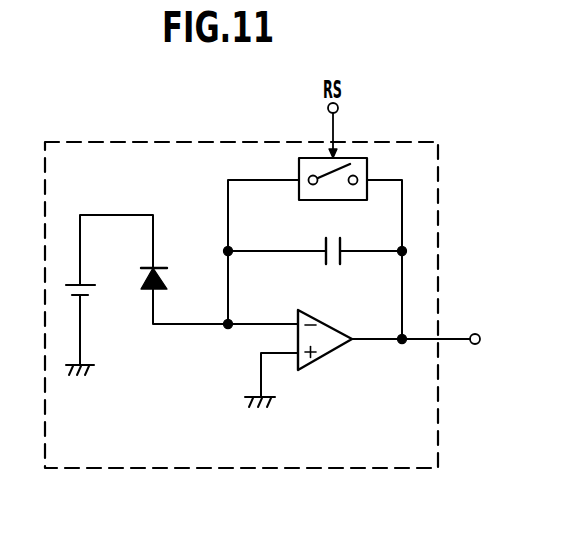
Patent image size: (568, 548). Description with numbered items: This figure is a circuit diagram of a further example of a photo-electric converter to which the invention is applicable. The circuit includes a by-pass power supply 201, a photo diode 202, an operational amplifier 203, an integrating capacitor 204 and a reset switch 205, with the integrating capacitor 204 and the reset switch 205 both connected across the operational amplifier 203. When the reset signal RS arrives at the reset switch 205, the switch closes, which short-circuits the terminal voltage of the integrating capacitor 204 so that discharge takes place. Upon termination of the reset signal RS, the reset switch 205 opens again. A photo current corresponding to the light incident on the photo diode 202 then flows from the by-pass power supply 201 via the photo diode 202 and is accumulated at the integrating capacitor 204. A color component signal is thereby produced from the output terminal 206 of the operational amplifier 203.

The by-pass power supply 201 is at (89, 296).
The photo diode 202 is at (158, 266).
The operational amplifier 203 is at (332, 327).
The integrating capacitor 204 is at (324, 245).
The reset switch 205 is at (299, 172).
The output terminal 206 is at (478, 345).